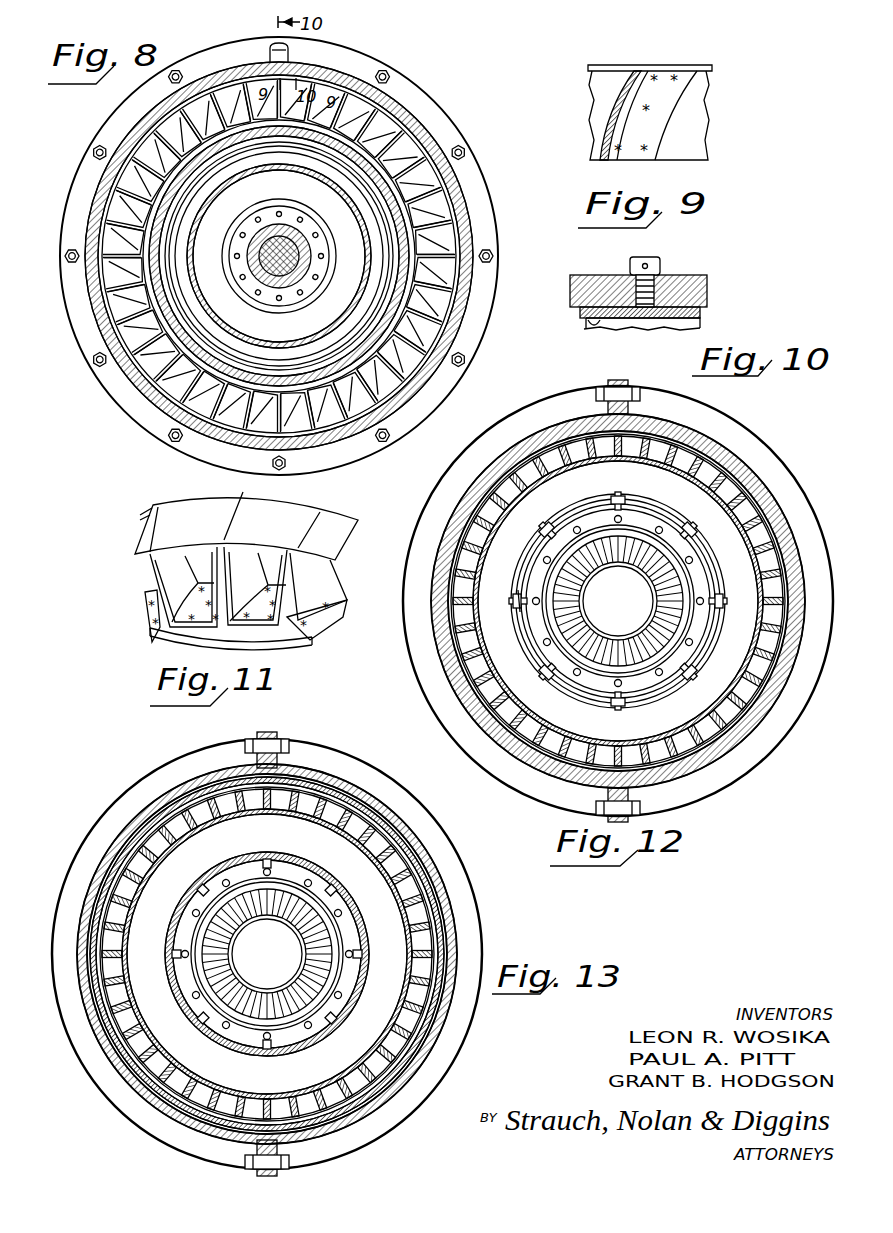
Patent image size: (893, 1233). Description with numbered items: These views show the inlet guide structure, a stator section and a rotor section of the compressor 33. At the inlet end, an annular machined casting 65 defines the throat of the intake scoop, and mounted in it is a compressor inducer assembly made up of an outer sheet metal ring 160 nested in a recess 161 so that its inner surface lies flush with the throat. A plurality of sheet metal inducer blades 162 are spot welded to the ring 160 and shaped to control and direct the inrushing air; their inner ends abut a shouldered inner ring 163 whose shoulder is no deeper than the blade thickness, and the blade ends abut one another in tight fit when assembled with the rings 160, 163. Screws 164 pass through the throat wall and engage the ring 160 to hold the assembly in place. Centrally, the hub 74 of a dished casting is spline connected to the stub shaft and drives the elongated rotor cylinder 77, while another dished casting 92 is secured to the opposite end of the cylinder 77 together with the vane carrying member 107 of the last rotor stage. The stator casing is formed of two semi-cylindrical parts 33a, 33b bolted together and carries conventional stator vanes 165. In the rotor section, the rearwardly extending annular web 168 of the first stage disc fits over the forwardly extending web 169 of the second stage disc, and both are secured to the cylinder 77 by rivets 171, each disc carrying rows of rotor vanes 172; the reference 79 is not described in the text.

In FIG. 13, the compressor 33 is at (372, 778).
In FIG. 12, the semi-cylindrical casing part 33a is at (752, 468).
In FIG. 13, the semi-cylindrical casing part 33a is at (418, 830).
In FIG. 12, the semi-cylindrical casing part 33b is at (500, 464).
In FIG. 13, the semi-cylindrical casing part 33b is at (138, 816).
In FIG. 8, the annular machined casting 65 is at (400, 108).
In FIG. 10, the annular machined casting 65 is at (708, 284).
In FIG. 8, the hub 74 is at (286, 236).
In FIG. 12, the rotor cylinder 77 is at (620, 522).
In FIG. 13, the rotor cylinder 77 is at (272, 872).
In FIG. 8, the annular passage 79 is at (224, 244).
In FIG. 12, the dished casting 92 is at (630, 640).
In FIG. 13, the vane carrying member 107 is at (320, 888).
In FIG. 8, the outer sheet metal ring 160 is at (462, 180).
In FIG. 10, the outer sheet metal ring 160 is at (700, 312).
In FIG. 11, the outer sheet metal ring 160 is at (170, 506).
In FIG. 8, the recess 161 is at (418, 116).
In FIG. 10, the recess 161 is at (584, 328).
In FIG. 8, the inducer blades 162 is at (464, 200).
In FIG. 9, the inducer blades 162 is at (610, 112).
In FIG. 10, the inducer blades 162 is at (637, 329).
In FIG. 11, the inducer blades 162 is at (310, 578).
In FIG. 8, the shouldered inner ring 163 is at (418, 226).
In FIG. 9, the shouldered inner ring 163 is at (700, 130).
In FIG. 11, the shouldered inner ring 163 is at (290, 642).
In FIG. 8, the screws 164 is at (292, 50).
In FIG. 10, the screws 164 is at (662, 266).
In FIG. 12, the stator vanes 165 is at (478, 684).
In FIG. 12, the annular web 168 is at (528, 550).
In FIG. 12, the annular web 169 is at (518, 612).
In FIG. 12, the rivets 171 is at (562, 518).
In FIG. 13, the rivets 171 is at (230, 870).
In FIG. 13, the rotor vanes 172 is at (438, 878).